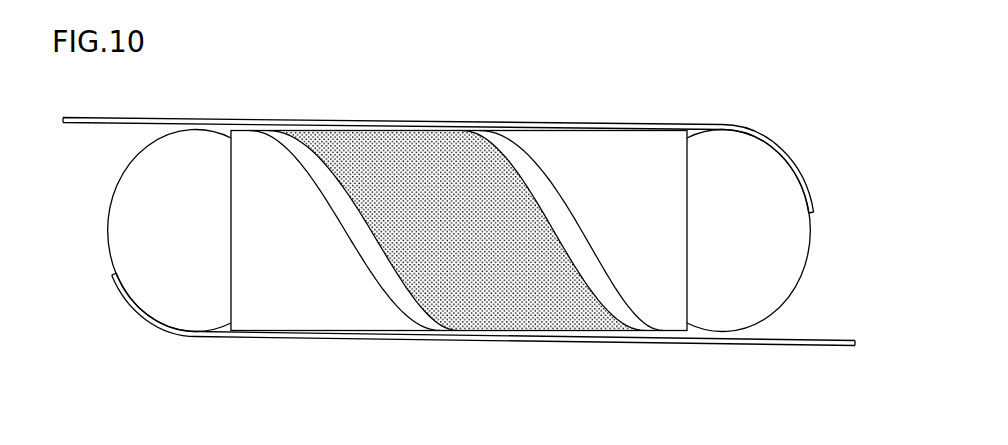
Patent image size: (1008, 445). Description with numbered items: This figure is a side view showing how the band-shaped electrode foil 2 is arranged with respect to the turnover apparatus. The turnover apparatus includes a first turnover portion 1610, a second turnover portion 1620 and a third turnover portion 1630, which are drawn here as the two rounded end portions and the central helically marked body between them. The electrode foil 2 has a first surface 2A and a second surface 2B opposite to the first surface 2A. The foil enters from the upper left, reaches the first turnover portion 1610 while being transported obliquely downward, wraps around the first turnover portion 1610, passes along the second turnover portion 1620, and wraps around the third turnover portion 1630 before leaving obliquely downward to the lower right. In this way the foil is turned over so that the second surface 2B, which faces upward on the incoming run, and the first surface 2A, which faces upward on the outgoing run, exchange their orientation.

The electrode foil 2 is at (459, 210).
The first surface 2A is at (827, 339).
The second surface 2B is at (139, 117).
The first turnover portion 1610 is at (768, 167).
The second turnover portion 1620 is at (630, 177).
The third turnover portion 1630 is at (152, 295).